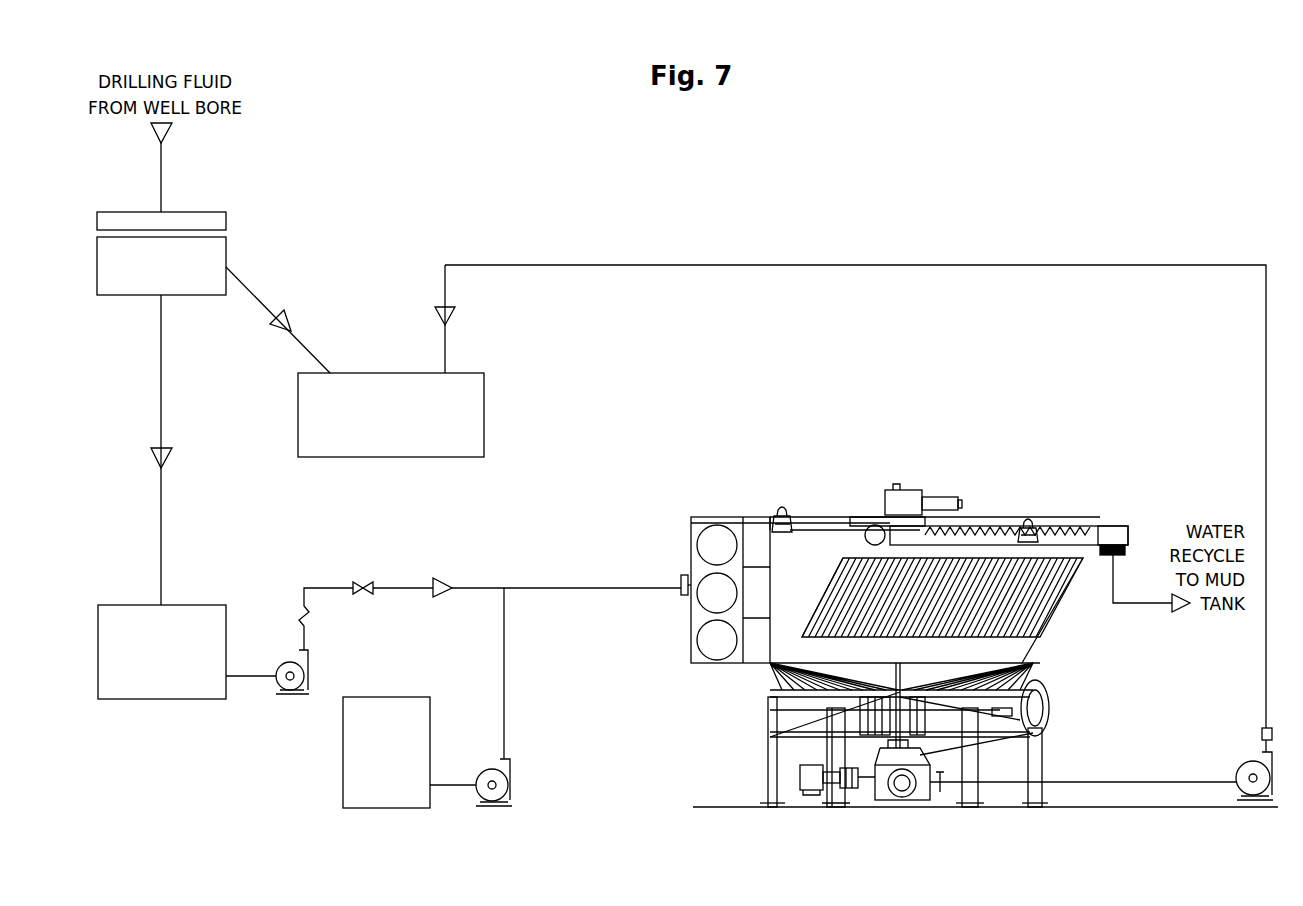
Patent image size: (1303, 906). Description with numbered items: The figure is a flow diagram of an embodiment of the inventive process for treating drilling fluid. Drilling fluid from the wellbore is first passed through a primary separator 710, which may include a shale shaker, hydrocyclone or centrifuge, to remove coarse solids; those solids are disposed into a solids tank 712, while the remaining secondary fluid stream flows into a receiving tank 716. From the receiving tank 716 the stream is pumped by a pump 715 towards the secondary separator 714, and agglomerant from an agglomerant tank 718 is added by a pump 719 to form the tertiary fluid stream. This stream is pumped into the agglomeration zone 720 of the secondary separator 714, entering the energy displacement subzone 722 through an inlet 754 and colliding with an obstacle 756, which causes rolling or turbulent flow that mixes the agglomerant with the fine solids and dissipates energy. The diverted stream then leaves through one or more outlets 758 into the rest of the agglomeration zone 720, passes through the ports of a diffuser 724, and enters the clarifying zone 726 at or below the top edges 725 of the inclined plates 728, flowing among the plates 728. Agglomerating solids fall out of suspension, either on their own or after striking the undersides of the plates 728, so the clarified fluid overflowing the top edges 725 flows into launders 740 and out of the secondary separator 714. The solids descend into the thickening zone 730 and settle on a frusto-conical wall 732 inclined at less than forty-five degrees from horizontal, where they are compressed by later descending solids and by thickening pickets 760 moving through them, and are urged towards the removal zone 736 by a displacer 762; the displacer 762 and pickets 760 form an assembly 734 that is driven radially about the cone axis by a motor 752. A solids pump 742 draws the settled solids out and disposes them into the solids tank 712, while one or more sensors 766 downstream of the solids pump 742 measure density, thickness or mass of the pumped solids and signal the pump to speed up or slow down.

The primary separator 710 is at (226, 243).
The solids tank 712 is at (484, 412).
The secondary separator 714 is at (1072, 680).
The pump 715 is at (287, 698).
The receiving tank 716 is at (222, 603).
The agglomerant tank 718 is at (418, 697).
The pump 719 is at (510, 785).
The agglomeration zone 720 is at (865, 641).
The energy displacement subzone 722 is at (697, 517).
The diffuser 724 is at (770, 567).
The top edges 725 is at (850, 557).
The clarifying zone 726 is at (1030, 624).
The inclined plates 728 is at (1030, 650).
The thickening zone 730 is at (770, 683).
The frusto-conical wall 732 is at (775, 800).
The assembly 734 is at (770, 716).
The removal zone 736 is at (942, 785).
The launders 740 is at (1088, 535).
The solids pump 742 is at (1240, 768).
The motor 752 is at (945, 492).
The inlet 754 is at (683, 580).
The obstacle 756 is at (745, 550).
The outlets 758 is at (727, 535).
The thickening pickets 760 is at (770, 735).
The displacer 762 is at (875, 788).
The sensors 766 is at (1262, 730).